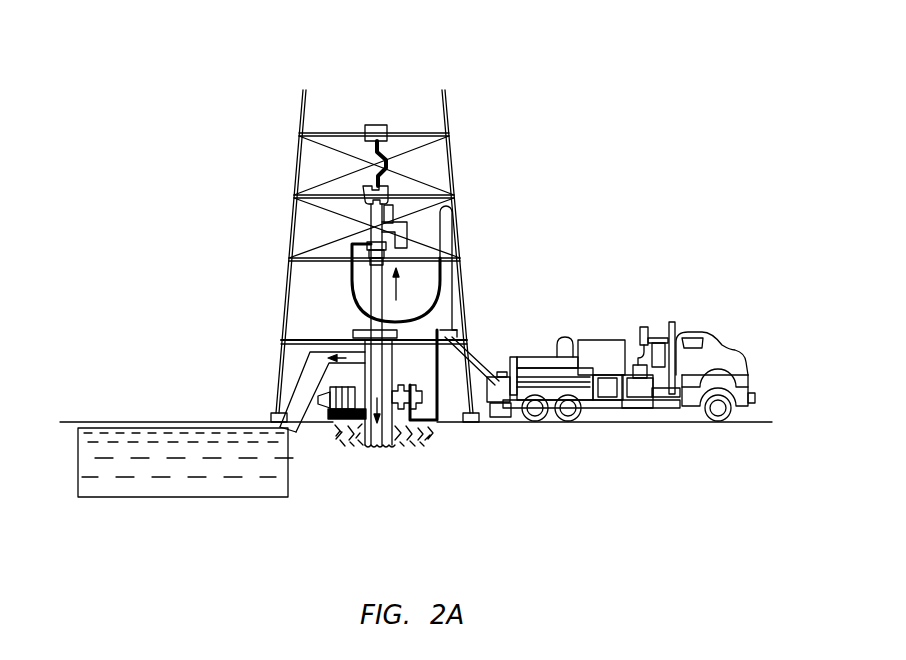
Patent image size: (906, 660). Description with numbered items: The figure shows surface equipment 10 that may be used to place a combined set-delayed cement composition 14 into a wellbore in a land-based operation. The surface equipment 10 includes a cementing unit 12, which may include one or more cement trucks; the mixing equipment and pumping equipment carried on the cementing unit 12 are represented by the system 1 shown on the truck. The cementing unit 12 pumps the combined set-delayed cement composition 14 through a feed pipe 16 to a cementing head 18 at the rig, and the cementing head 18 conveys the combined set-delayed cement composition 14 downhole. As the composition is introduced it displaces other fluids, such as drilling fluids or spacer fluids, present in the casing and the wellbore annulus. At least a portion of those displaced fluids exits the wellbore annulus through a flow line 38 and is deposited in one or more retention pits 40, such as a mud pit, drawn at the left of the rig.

The surface equipment 10 is at (650, 127).
The cementing head 18 is at (412, 184).
The combined set-delayed cement composition 14 is at (350, 285).
The feed pipe 16 is at (449, 352).
The flow line 38 is at (307, 417).
The retention pit 40 is at (120, 497).
The cementing unit 12 is at (664, 409).
The system 1 is at (580, 330).